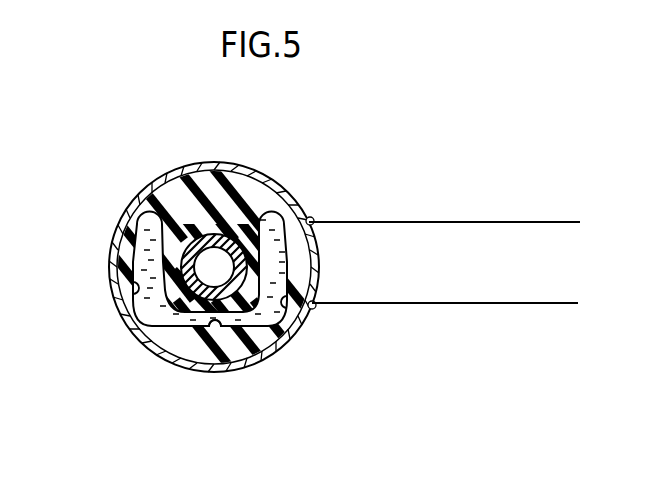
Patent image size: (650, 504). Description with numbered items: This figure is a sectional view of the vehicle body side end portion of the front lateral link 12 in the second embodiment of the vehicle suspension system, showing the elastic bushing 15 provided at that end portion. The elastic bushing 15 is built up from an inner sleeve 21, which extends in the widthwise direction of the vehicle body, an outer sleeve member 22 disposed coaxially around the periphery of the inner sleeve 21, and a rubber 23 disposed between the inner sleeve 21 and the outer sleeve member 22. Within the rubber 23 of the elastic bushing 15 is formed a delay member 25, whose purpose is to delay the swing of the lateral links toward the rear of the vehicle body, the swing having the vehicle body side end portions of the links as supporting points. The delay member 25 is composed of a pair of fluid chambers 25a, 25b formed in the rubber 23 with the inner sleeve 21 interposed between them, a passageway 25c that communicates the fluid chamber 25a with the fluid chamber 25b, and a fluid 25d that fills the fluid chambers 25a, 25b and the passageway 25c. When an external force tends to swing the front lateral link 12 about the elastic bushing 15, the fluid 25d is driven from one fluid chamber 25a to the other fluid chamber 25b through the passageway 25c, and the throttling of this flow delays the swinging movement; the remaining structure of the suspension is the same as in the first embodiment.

The front lateral link 12 is at (465, 221).
The elastic bushing 15 is at (131, 192).
The inner sleeve 21 is at (243, 192).
The outer sleeve member 22 is at (205, 162).
The rubber 23 is at (172, 187).
The delay member 25 is at (183, 343).
The fluid chamber 25a is at (115, 302).
The fluid chamber 25b is at (303, 313).
The passageway 25c is at (213, 323).
The fluid 25d is at (388, 205).